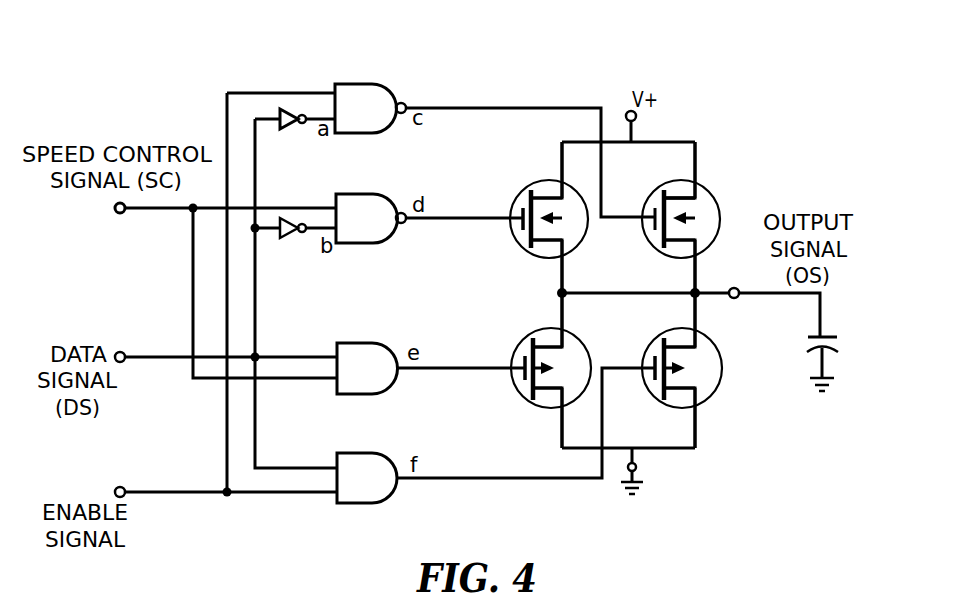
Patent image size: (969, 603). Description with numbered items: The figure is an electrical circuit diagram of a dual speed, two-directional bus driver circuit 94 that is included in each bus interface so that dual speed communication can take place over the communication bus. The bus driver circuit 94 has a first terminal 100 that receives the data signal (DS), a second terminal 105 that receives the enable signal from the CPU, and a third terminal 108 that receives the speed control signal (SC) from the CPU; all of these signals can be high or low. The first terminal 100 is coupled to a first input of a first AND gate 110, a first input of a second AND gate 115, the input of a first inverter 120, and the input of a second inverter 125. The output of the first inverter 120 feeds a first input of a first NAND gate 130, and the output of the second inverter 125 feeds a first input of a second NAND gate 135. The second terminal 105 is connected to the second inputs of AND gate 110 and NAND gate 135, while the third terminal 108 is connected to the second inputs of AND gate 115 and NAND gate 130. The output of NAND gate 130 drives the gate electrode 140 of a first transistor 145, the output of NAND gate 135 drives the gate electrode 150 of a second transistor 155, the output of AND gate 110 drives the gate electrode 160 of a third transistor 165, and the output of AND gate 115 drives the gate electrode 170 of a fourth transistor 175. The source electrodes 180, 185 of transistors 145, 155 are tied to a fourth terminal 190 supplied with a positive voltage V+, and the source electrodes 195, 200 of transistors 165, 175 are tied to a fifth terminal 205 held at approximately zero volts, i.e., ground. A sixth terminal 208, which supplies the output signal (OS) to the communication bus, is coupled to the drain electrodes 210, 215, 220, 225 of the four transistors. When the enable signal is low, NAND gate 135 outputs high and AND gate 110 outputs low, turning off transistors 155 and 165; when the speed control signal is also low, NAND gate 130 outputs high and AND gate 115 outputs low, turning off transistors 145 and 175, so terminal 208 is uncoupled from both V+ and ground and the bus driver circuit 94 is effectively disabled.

The bus driver circuit 94 is at (485, 540).
The first terminal 100 is at (123, 352).
The second terminal 105 is at (124, 487).
The third terminal 108 is at (122, 214).
The first AND gate 110 is at (362, 453).
The second AND gate 115 is at (348, 343).
The first inverter 120 is at (288, 238).
The second inverter 125 is at (288, 129).
The first NAND gate 130 is at (355, 243).
The second NAND gate 135 is at (386, 86).
The gate electrode 140 is at (516, 240).
The first transistor 145 is at (523, 190).
The gate electrode 150 is at (646, 234).
The second transistor 155 is at (676, 181).
The gate electrode 160 is at (648, 350).
The third transistor 165 is at (657, 398).
The gate electrode 170 is at (516, 350).
The fourth transistor 175 is at (520, 396).
The source electrode 180 is at (558, 189).
The source electrode 185 is at (707, 190).
The fourth terminal 190 is at (637, 114).
The source electrode 195 is at (698, 392).
The source electrode 200 is at (560, 406).
The fifth terminal 205 is at (638, 466).
The sixth terminal 208 is at (739, 297).
The drain electrode 210 is at (556, 256).
The drain electrode 215 is at (697, 247).
The drain electrode 220 is at (700, 340).
The drain electrode 225 is at (563, 338).